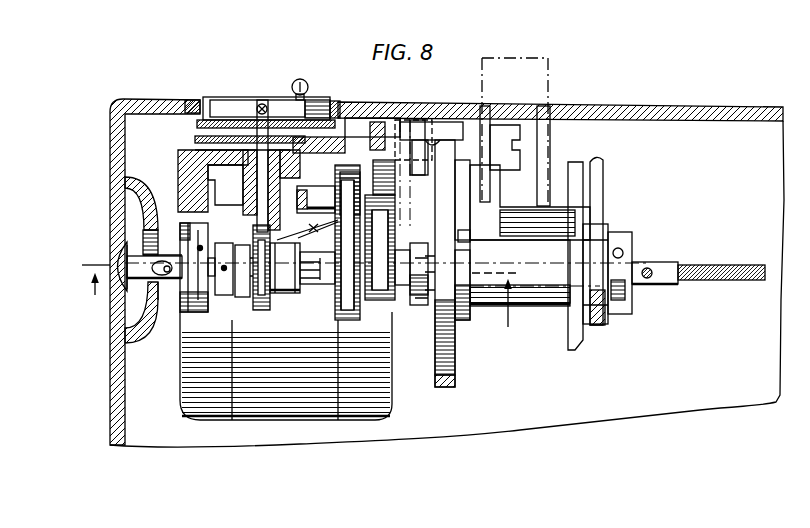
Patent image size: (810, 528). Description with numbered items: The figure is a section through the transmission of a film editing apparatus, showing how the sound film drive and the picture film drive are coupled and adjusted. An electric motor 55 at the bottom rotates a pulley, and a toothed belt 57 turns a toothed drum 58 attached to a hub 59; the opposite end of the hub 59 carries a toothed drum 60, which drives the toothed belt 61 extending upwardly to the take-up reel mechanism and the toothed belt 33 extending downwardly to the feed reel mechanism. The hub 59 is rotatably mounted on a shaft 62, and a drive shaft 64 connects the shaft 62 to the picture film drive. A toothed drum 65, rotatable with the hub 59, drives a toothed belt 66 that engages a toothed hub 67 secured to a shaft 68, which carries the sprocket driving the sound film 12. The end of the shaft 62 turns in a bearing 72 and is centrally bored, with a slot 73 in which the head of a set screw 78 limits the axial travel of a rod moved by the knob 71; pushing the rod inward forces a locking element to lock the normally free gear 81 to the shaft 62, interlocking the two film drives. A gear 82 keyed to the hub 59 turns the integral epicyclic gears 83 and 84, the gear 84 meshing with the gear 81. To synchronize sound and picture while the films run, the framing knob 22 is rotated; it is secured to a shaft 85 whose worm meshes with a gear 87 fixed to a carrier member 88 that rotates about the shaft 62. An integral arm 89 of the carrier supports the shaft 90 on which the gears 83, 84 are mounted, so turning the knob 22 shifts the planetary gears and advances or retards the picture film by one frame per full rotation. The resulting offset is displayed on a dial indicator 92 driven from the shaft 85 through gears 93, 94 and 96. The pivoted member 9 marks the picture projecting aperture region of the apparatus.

The sound film 12 is at (550, 88).
The framing knob 22 is at (222, 98).
The shaft 85 is at (277, 118).
The dial indicator 92 is at (311, 101).
The gear 96 is at (199, 122).
The gear 94 is at (199, 139).
The gear 93 is at (200, 150).
The epicyclic gear 84 is at (347, 172).
The epicyclic gear 83 is at (383, 162).
The toothed hub 67 is at (394, 118).
The shaft 68 is at (438, 110).
The shaft 90 is at (315, 190).
The knob 71 is at (121, 291).
The slot 73 is at (165, 262).
The set screw 78 is at (182, 262).
The bearing 72 is at (197, 314).
The gear 87 is at (262, 312).
The carrier member 88 is at (290, 296).
The integral arm 89 is at (307, 252).
The gear 81 is at (346, 312).
The gear 82 is at (382, 300).
The toothed drum 65 is at (420, 270).
The toothed belt 66 is at (420, 222).
The toothed belt 57 is at (441, 362).
The toothed drum 58 is at (458, 373).
The hub 59 is at (545, 306).
The pivoted member 9 is at (298, 299).
The toothed belt 33 is at (572, 350).
The toothed belt 61 is at (603, 175).
The toothed drum 60 is at (604, 322).
The shaft 62 is at (664, 266).
The drive shaft 64 is at (726, 266).
The electric motor 55 is at (384, 420).